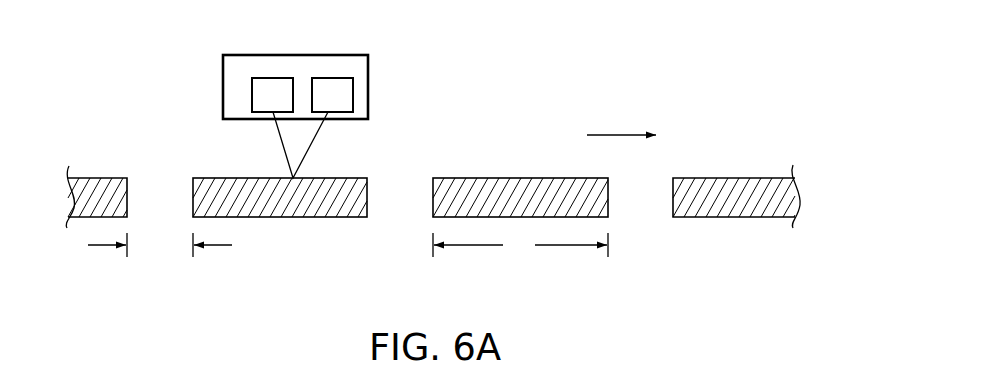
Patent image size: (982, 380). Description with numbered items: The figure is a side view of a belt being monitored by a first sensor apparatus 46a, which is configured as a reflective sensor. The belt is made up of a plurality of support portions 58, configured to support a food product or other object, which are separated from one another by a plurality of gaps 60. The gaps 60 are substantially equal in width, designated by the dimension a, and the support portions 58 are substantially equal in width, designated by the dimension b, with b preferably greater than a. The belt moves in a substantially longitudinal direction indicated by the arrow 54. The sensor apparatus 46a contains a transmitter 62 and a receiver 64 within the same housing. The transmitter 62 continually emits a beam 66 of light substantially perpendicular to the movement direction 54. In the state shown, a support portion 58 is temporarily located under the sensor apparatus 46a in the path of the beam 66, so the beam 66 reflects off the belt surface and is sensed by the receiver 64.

The sensor apparatus 46a is at (368, 75).
The transmitter 62 is at (275, 78).
The receiver 64 is at (337, 78).
The beam 66 is at (282, 147).
The support portion 58 is at (352, 178).
The gap 60 is at (166, 174).
The arrow 54 is at (620, 135).